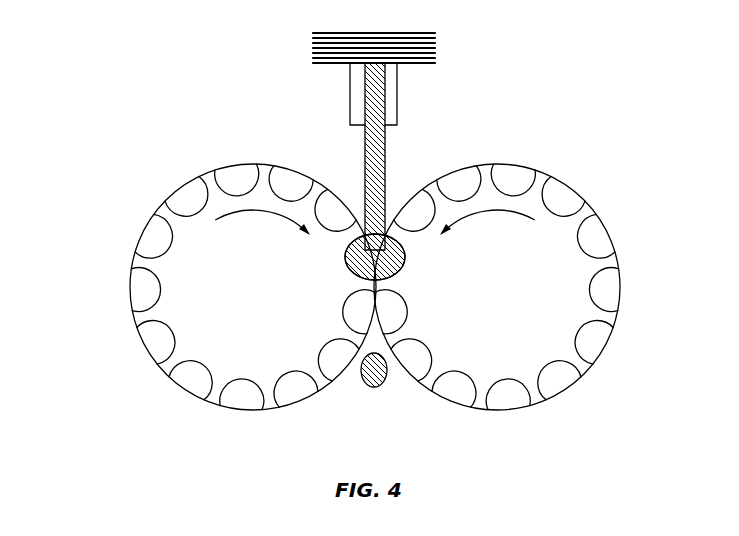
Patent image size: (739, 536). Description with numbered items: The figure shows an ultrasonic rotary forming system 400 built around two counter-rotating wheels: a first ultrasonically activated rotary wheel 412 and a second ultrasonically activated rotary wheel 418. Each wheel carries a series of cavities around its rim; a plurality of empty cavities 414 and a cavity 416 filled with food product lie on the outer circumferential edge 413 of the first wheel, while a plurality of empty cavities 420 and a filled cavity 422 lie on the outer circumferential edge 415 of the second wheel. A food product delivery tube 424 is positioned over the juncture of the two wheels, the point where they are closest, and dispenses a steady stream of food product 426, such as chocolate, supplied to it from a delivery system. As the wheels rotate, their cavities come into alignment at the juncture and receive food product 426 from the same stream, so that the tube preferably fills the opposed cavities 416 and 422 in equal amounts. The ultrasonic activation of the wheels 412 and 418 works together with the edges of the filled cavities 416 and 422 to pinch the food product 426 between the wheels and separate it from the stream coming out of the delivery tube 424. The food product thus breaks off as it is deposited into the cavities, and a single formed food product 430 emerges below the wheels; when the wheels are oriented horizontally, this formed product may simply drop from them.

The ultrasonic rotary forming system 400 is at (98, 143).
The first ultrasonically activated rotary wheel 412 is at (152, 316).
The outer circumferential edge 413 is at (142, 232).
The empty cavities 414 is at (291, 405).
The outer circumferential edge 415 is at (613, 242).
The filled cavity 416 is at (363, 230).
The second ultrasonically activated rotary wheel 418 is at (578, 372).
The empty cavities 420 is at (546, 437).
The filled cavity 422 is at (387, 230).
The food product delivery tube 424 is at (397, 91).
The food product 426 is at (385, 136).
The single formed food product 430 is at (376, 388).